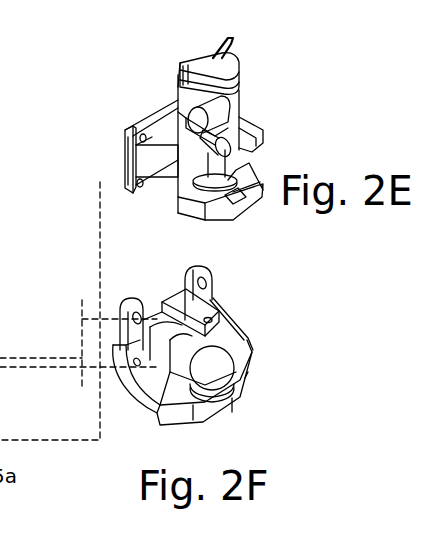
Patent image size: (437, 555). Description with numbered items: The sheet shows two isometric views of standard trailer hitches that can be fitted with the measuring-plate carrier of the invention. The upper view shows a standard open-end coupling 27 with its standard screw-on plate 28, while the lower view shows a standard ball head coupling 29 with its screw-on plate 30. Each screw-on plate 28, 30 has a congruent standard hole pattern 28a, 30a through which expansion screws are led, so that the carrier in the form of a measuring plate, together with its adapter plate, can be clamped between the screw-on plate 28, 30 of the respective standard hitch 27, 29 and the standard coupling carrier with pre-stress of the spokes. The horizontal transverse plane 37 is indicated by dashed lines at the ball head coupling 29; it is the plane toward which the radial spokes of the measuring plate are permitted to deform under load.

In FIG. 2E, the standard open-end coupling 27 is at (253, 120).
In FIG. 2E, the screw-on plate 28 is at (158, 115).
In FIG. 2E, the standard hole pattern 28a is at (130, 137).
In FIG. 2F, the standard ball head coupling 29 is at (245, 330).
In FIG. 2F, the screw-on plate 30 is at (115, 322).
In FIG. 2F, the standard hole pattern 30a is at (143, 313).
In FIG. 2F, the horizontal transverse plane 37 is at (48, 367).